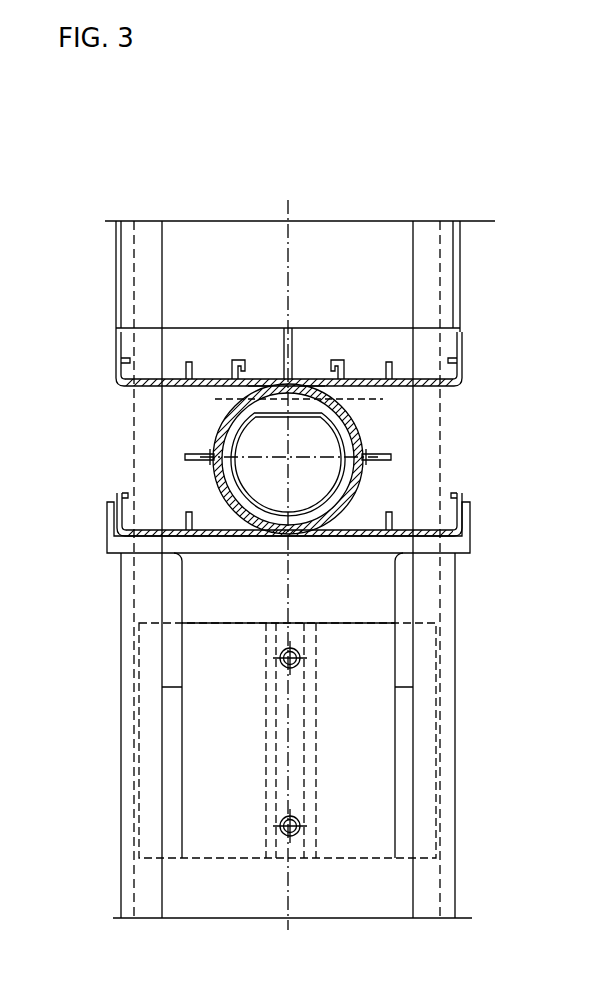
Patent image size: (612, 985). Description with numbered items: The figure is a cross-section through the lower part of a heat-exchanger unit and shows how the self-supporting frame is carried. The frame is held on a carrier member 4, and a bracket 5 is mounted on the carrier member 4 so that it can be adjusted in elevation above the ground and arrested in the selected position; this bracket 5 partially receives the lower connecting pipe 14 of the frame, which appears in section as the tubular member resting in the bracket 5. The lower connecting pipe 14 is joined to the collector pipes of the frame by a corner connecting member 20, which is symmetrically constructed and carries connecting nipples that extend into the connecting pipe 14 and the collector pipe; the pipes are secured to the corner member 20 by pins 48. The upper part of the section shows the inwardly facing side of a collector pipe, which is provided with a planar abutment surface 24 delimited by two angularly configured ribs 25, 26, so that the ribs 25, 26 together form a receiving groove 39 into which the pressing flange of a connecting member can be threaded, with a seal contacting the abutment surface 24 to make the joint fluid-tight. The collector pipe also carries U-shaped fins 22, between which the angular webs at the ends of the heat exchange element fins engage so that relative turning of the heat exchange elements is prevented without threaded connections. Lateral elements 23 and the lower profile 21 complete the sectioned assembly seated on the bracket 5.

The carrier member 4 is at (457, 602).
The bracket 5 is at (473, 535).
The lower connecting pipe 14 is at (363, 433).
The corner connecting member 20 is at (345, 488).
The lower channel 21 is at (137, 540).
The U-shaped fin 22 is at (144, 392).
The lateral stubs 23 is at (206, 459).
The planar abutment surface 24 is at (313, 378).
The angularly configured rib 25 is at (340, 354).
The angularly configured rib 26 is at (237, 357).
The receiving groove 39 is at (260, 378).
The pin 48 is at (372, 398).